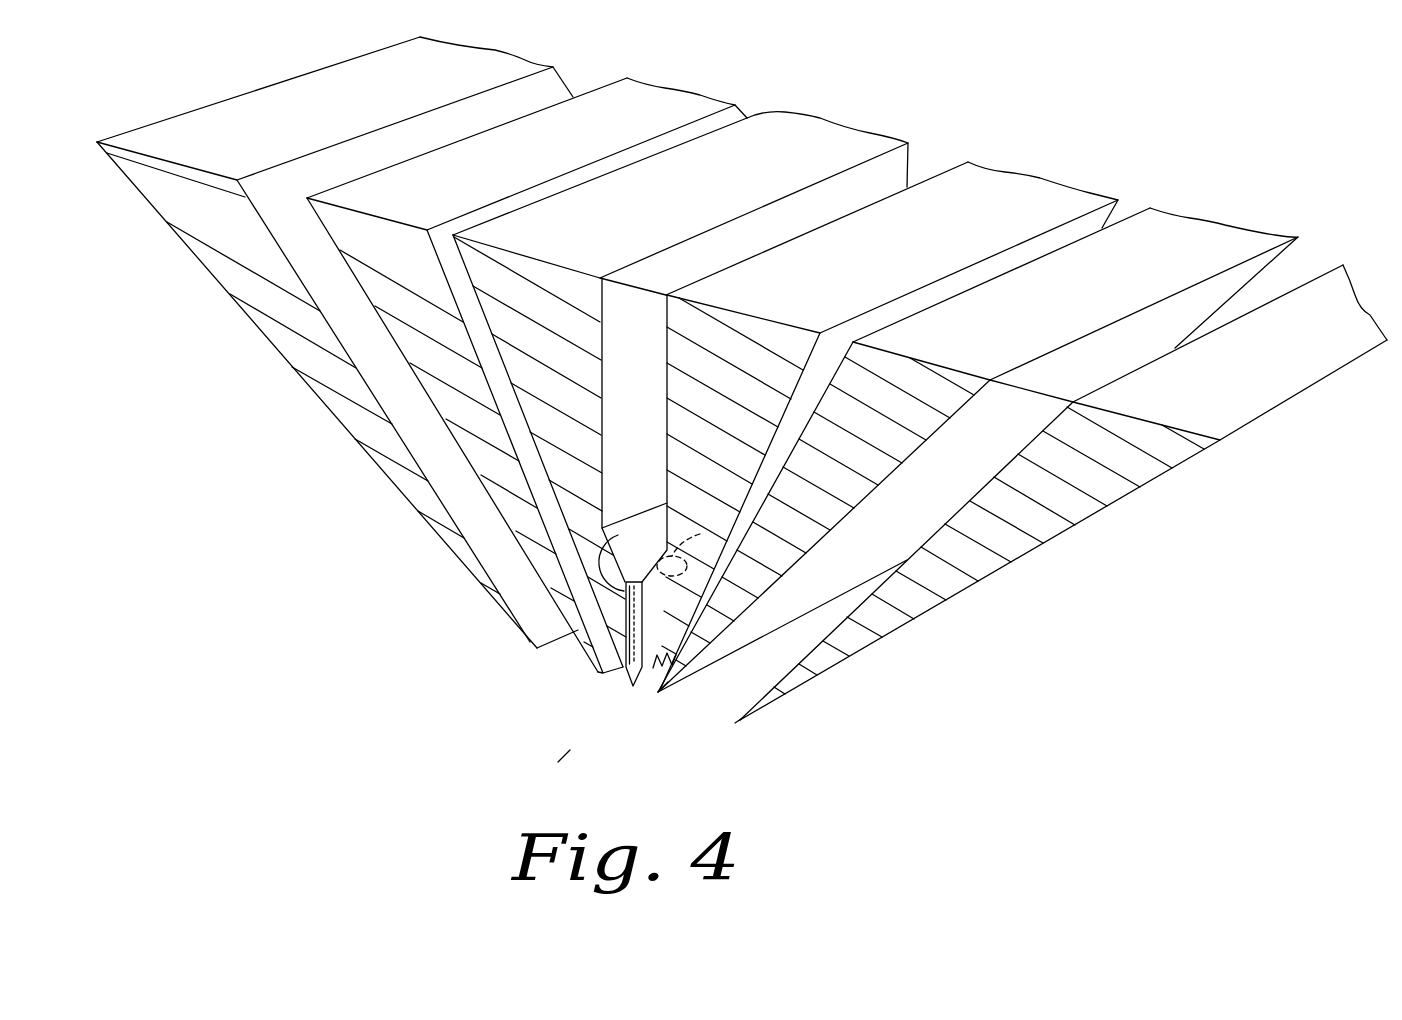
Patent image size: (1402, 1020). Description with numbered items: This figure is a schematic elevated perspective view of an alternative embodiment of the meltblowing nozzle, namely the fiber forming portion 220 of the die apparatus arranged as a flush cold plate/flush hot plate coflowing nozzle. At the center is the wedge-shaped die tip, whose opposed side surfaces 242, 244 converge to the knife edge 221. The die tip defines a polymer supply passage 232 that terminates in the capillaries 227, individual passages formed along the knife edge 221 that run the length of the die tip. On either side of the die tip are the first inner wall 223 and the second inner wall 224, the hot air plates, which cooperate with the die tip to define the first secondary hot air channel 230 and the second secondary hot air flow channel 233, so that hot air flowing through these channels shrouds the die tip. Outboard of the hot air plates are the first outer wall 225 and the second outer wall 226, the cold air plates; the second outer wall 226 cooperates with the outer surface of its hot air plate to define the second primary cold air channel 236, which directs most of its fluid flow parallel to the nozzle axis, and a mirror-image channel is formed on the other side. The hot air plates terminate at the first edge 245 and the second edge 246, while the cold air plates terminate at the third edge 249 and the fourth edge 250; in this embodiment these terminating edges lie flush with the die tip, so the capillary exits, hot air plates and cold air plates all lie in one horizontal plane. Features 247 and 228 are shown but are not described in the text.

The fiber forming portion 220 is at (927, 92).
The side surface 244 is at (313, 195).
The second outer wall 226 is at (507, 67).
The second primary cold air channel 236 is at (590, 82).
The second inner wall 224 is at (690, 103).
The second secondary hot air flow channel 233 is at (763, 103).
The polymer supply passage 232 is at (935, 163).
The first secondary hot air channel 230 is at (1127, 208).
The first inner wall 223 is at (1200, 228).
The first outer wall 225 is at (1343, 352).
The side surface 242 is at (1000, 465).
The capillaries 227 is at (757, 530).
The fourth edge 250 is at (537, 648).
The second edge 246 is at (600, 675).
The knife edge 221 is at (636, 688).
The thin layer 247 is at (656, 697).
The first edge 245 is at (660, 690).
The third edge 249 is at (738, 720).
The direction arrow 228 is at (572, 748).